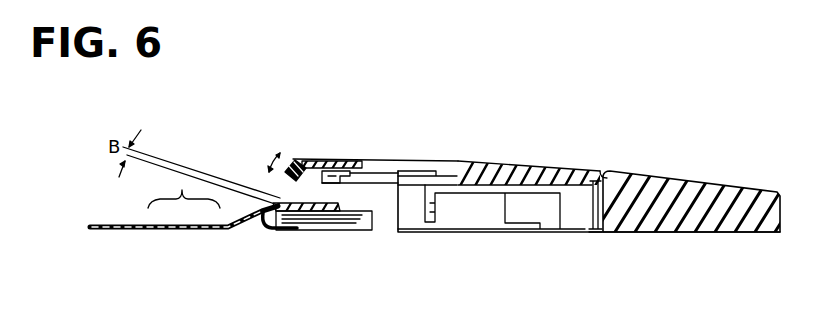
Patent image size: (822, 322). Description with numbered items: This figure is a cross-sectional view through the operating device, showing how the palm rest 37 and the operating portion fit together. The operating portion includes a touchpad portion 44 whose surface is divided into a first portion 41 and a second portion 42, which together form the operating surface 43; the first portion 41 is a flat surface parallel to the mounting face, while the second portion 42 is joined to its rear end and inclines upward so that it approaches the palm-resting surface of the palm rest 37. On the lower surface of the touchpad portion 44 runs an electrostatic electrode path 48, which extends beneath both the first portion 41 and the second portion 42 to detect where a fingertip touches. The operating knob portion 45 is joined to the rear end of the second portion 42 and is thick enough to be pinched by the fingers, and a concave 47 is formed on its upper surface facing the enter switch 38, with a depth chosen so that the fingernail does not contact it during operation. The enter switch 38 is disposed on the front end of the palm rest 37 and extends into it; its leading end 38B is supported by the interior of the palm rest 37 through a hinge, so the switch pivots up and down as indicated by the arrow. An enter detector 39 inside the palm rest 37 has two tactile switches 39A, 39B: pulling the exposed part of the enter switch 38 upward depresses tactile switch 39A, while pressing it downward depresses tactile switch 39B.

The palm rest 37 is at (507, 165).
The enter switch 38 is at (295, 163).
The leading end 38B is at (345, 193).
The enter detector 39 is at (357, 168).
The tactile switch 39A is at (335, 158).
The tactile switch 39B is at (340, 214).
The first portion 41 is at (133, 227).
The second portion 42 is at (236, 220).
The operating surface 43 is at (180, 189).
The touchpad portion 44 is at (86, 226).
The operating knob portion 45 is at (272, 194).
The concave 47 is at (280, 196).
The electrostatic electrode path 48 is at (267, 233).